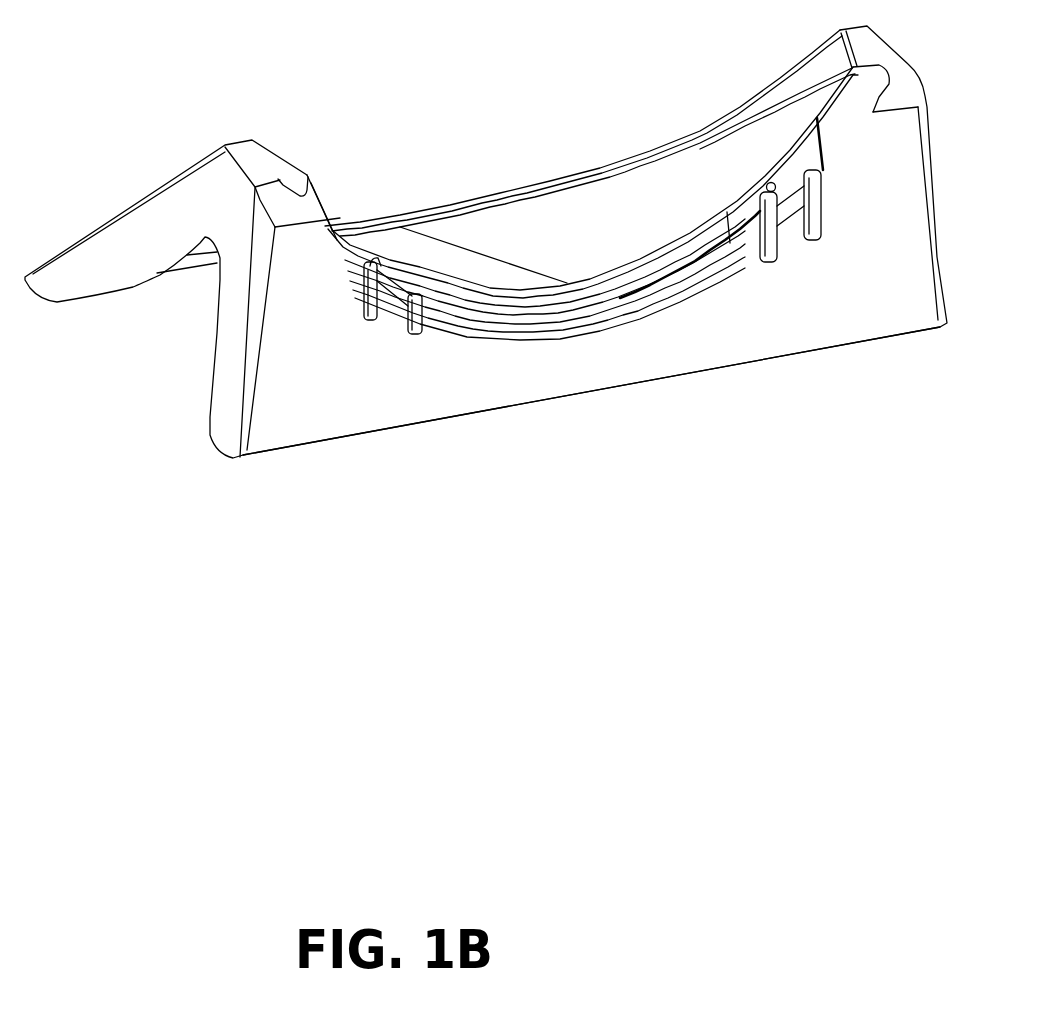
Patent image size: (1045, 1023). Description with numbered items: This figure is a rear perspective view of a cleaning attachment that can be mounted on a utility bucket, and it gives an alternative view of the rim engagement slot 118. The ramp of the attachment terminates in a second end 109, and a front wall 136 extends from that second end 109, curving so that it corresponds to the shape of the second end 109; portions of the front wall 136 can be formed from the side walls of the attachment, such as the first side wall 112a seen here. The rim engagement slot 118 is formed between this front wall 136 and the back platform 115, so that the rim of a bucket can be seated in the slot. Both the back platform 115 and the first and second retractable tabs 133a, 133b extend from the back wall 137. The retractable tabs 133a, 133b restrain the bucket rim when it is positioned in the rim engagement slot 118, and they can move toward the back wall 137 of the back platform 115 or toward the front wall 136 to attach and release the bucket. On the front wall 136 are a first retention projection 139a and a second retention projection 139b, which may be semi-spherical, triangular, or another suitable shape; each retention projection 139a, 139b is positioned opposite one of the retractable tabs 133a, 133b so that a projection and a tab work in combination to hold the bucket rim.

The second end 109 is at (648, 230).
The first side wall 112a is at (908, 46).
The back platform 115 is at (695, 296).
The rim engagement slot 118 is at (625, 300).
The first retractable tab 133a is at (392, 326).
The second retractable tab 133b is at (800, 246).
The front wall 136 is at (607, 290).
The back wall 137 is at (583, 372).
The first retention projection 139a is at (418, 267).
The second retention projection 139b is at (763, 184).